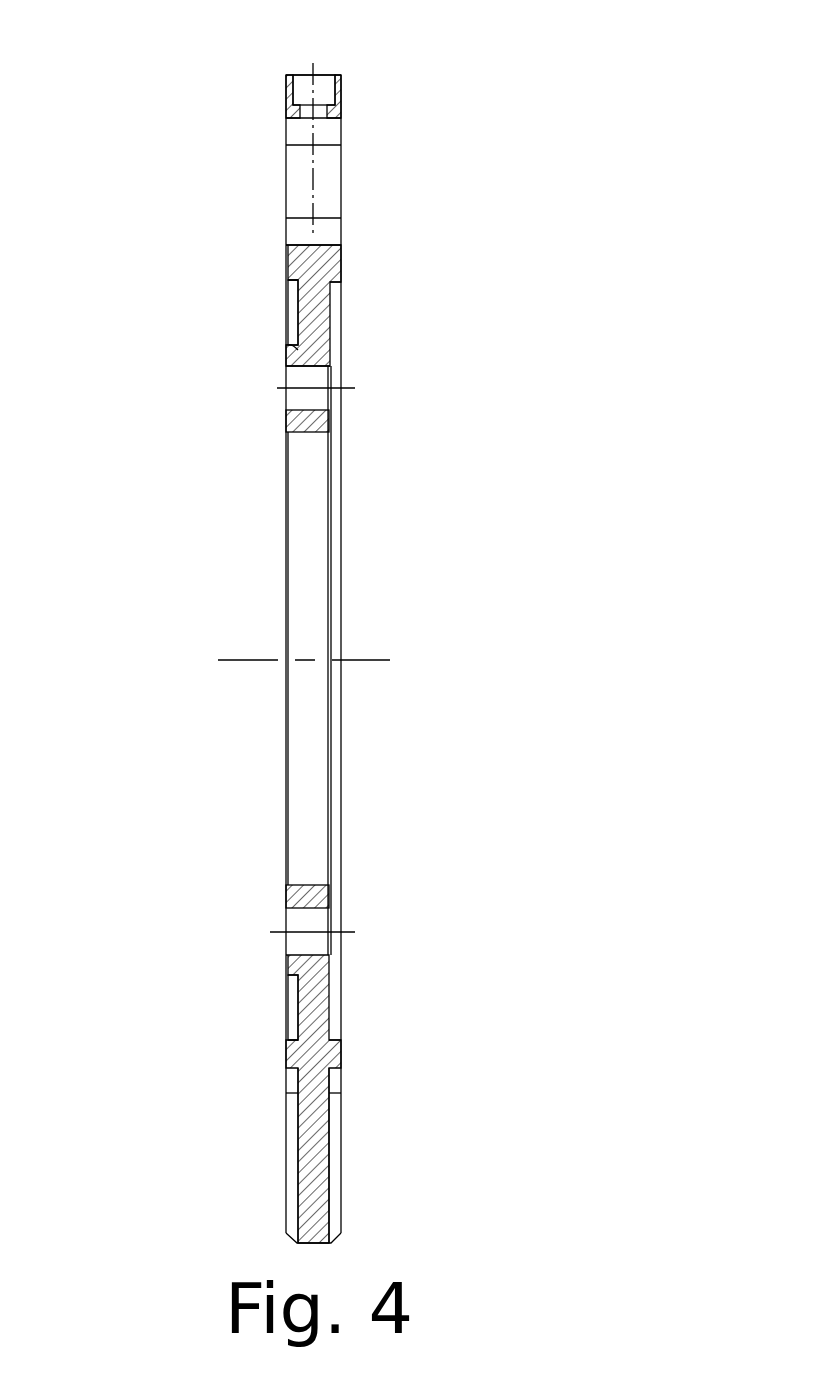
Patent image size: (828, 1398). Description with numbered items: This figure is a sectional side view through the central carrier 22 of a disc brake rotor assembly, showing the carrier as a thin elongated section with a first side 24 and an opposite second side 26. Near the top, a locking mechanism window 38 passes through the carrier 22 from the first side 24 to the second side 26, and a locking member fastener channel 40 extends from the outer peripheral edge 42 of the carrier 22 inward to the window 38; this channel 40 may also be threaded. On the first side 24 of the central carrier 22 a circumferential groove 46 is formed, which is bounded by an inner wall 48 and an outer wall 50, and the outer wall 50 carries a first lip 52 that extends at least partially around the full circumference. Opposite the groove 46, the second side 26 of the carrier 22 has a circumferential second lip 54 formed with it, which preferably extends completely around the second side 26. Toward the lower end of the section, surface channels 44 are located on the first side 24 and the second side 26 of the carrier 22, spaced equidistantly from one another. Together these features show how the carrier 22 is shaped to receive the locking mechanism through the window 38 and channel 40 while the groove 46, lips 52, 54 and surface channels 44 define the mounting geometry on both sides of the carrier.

The central carrier 22 is at (500, 98).
The first side 24 is at (222, 217).
The second side 26 is at (380, 258).
The locking mechanism window 38 is at (328, 182).
The locking member fastener channel 40 is at (326, 70).
The outer peripheral edge 42 is at (290, 75).
The surface channel 44 is at (292, 1177).
The circumferential groove 46 is at (245, 341).
The inner wall 48 is at (285, 350).
The outer wall 50 is at (291, 279).
The first lip 52 is at (296, 283).
The second lip 54 is at (338, 284).